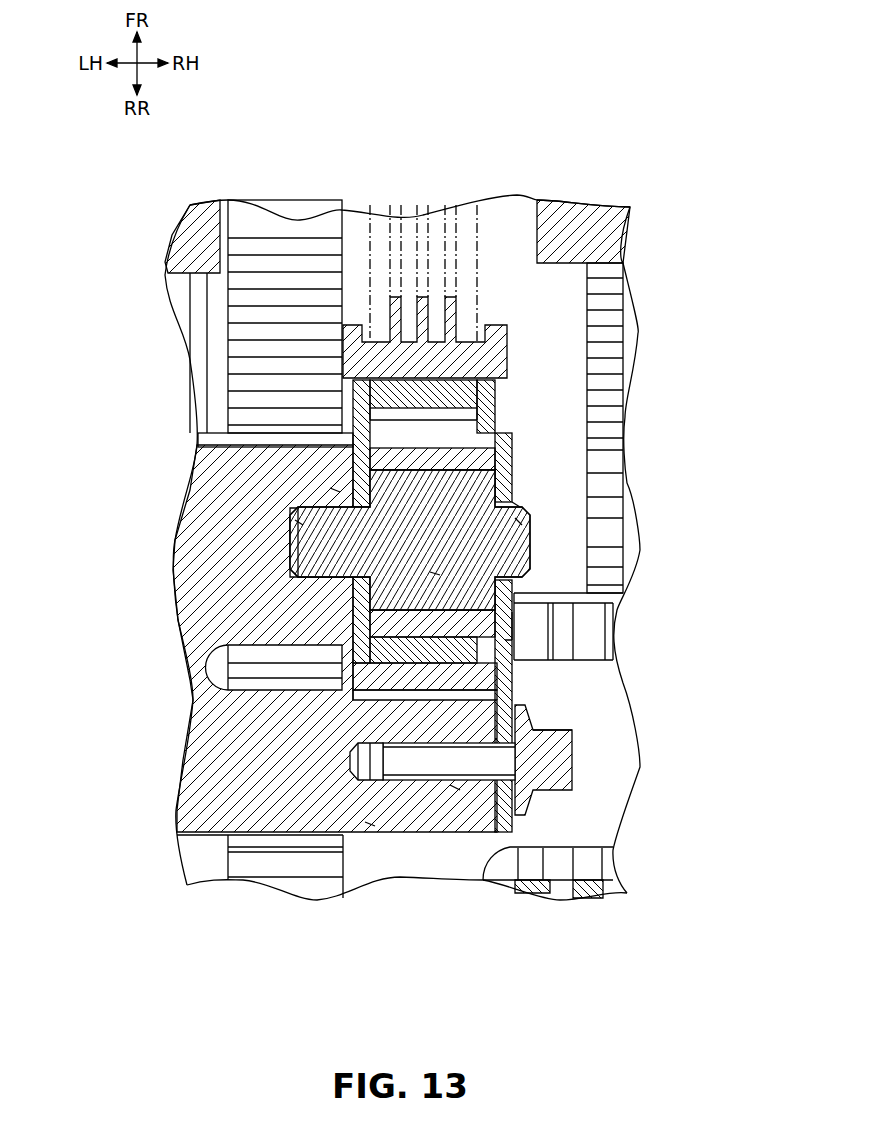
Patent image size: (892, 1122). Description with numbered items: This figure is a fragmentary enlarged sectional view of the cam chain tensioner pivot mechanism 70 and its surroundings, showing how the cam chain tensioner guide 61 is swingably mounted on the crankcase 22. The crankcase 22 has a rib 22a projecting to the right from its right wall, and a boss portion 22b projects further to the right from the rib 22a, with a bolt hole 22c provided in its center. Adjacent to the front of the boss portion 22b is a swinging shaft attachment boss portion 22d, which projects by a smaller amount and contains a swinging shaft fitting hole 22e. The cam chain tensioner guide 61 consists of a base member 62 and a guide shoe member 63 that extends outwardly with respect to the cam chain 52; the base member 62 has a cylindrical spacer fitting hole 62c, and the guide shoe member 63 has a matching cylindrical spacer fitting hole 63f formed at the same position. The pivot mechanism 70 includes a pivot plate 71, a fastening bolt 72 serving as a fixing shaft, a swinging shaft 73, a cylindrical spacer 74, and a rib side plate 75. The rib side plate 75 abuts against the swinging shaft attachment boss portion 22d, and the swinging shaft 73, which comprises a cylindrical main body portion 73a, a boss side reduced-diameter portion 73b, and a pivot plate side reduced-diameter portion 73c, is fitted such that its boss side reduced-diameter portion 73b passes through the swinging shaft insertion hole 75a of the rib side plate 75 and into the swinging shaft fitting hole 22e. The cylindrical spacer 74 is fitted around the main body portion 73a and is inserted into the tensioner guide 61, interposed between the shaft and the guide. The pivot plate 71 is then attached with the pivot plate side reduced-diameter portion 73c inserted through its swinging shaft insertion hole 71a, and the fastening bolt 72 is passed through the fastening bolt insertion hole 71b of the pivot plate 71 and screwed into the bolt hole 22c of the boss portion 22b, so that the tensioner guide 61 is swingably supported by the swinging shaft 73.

The crankcase 22 is at (215, 462).
The rib 22a is at (212, 820).
The boss portion 22b is at (372, 820).
The bolt hole 22c is at (455, 783).
The swinging shaft attachment boss portion 22d is at (337, 490).
The swinging shaft fitting hole 22e is at (345, 570).
The cam chain 52 is at (457, 282).
The cam chain tensioner guide 61 is at (706, 347).
The base member 62 is at (462, 397).
The cylindrical spacer fitting hole 62c is at (205, 665).
The guide shoe member 63 is at (505, 345).
The cylindrical spacer fitting hole 63f is at (513, 628).
The cam chain tensioner pivot mechanism 70 is at (557, 574).
The pivot plate 71 is at (515, 450).
The swinging shaft insertion hole 71a is at (527, 510).
The fastening bolt insertion hole 71b is at (573, 733).
The fastening bolt 72 is at (573, 757).
The swinging shaft 73 is at (483, 545).
The main body portion 73a is at (435, 572).
The boss side reduced-diameter portion 73b is at (300, 522).
The pivot plate side reduced-diameter portion 73c is at (520, 522).
The cylindrical spacer 74 is at (380, 450).
The rib side plate 75 is at (365, 400).
The swinging shaft insertion hole 75a is at (360, 545).